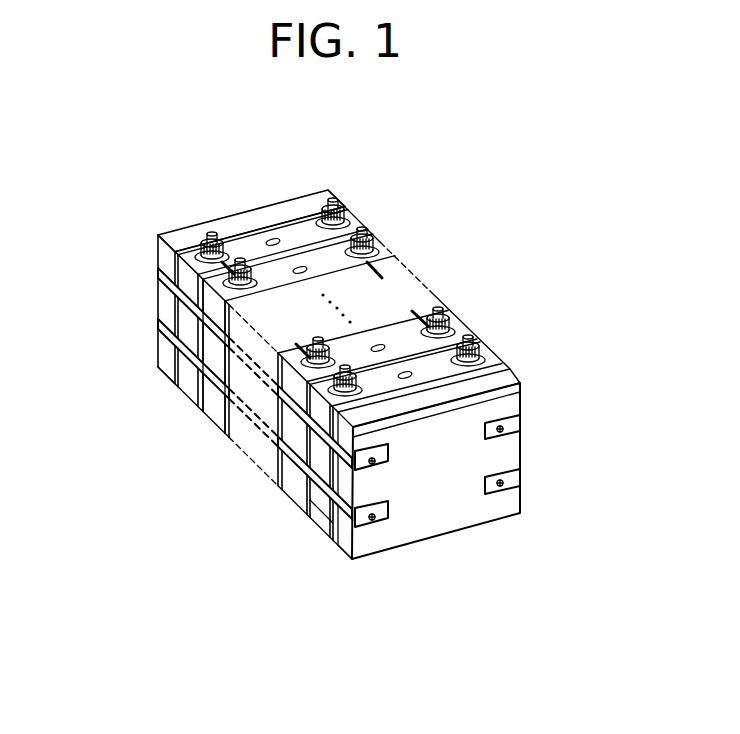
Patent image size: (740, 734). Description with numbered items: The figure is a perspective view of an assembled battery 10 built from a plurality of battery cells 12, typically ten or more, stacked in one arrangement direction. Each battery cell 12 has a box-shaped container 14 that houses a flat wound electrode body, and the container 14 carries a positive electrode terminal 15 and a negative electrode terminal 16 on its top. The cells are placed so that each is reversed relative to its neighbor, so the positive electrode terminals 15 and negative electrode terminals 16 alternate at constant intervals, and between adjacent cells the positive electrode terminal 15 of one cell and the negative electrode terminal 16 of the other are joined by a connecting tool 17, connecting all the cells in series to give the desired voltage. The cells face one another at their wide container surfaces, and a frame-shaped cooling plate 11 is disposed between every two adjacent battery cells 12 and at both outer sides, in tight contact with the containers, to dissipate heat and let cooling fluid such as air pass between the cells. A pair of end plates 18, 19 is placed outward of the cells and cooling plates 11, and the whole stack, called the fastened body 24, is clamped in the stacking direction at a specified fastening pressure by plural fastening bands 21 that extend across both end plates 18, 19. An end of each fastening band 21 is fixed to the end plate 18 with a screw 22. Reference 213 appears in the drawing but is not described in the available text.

The assembled battery 10 is at (571, 219).
The cooling plate 11 is at (503, 372).
The battery cell 12 is at (290, 232).
The container 14 is at (318, 262).
The positive electrode terminal 15 is at (210, 237).
The negative electrode terminal 16 is at (238, 270).
The connecting tool 17 is at (227, 262).
The end plate 18 is at (513, 397).
The end plate 19 is at (163, 253).
The fastening band 21 is at (522, 426).
The screw 22 is at (386, 516).
The fastened body 24 is at (204, 434).
The case bottom portion 213 is at (325, 523).